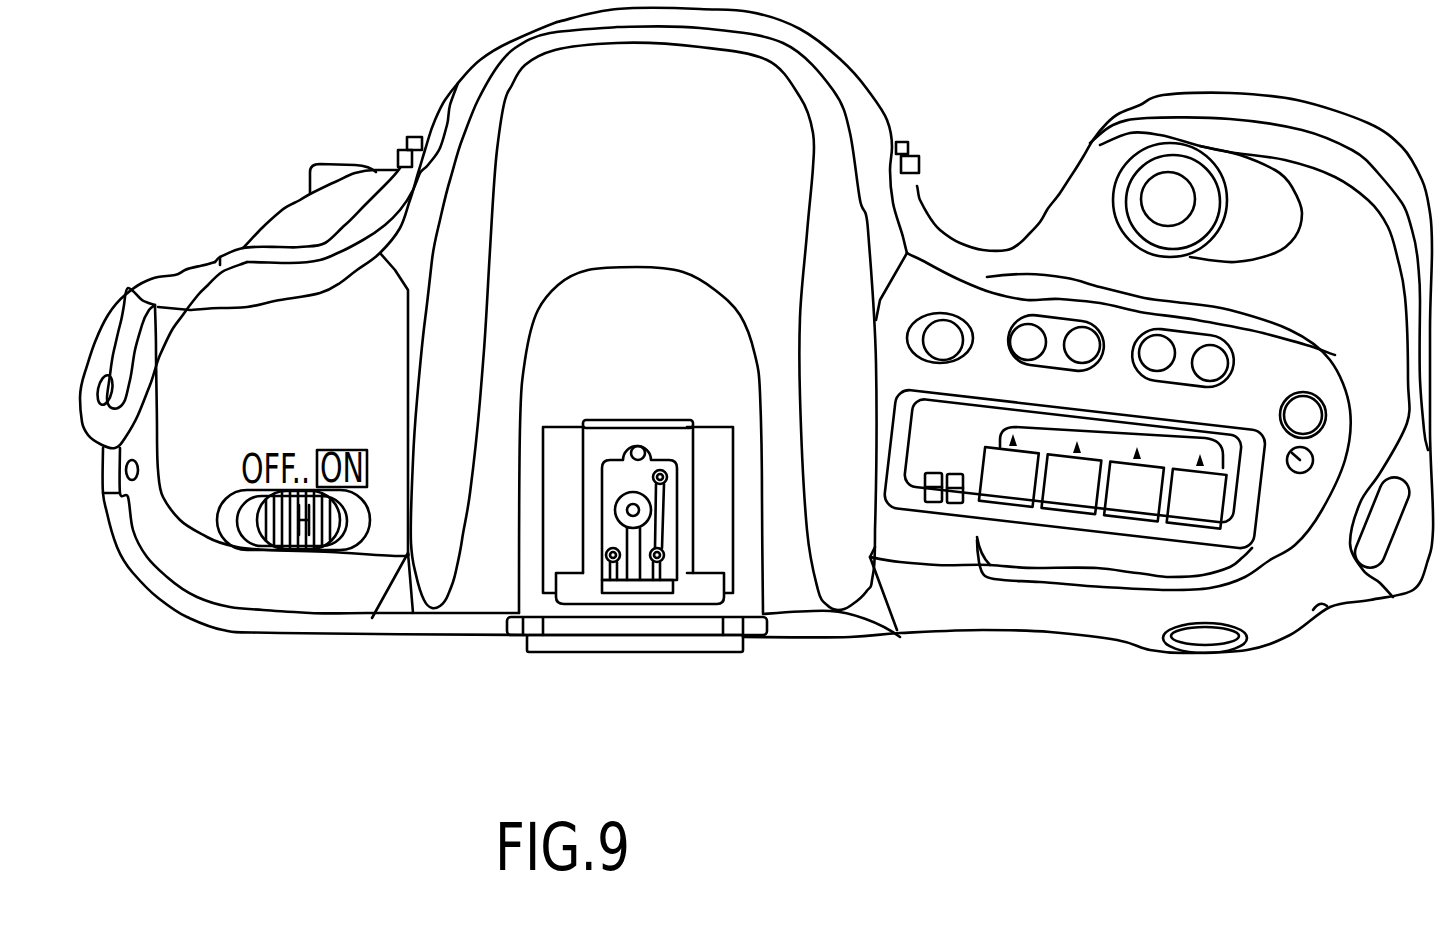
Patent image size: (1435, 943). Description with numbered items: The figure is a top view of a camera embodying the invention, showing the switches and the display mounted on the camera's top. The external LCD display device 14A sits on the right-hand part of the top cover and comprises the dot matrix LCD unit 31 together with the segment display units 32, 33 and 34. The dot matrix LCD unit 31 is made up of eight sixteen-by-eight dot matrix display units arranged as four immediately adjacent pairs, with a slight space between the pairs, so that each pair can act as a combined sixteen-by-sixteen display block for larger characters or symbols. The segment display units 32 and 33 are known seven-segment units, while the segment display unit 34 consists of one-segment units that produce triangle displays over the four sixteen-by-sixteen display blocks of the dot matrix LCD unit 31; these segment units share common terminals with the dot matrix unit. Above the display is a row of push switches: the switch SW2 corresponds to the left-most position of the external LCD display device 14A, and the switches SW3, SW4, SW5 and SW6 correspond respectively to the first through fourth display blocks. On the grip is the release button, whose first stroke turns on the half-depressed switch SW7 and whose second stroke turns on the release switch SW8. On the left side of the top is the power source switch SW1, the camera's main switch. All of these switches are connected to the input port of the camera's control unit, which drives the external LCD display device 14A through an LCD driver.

The power source switch SW1 is at (253, 537).
The switch SW2 is at (943, 337).
The switch SW3 is at (1027, 330).
The switch SW4 is at (1080, 340).
The switch SW5 is at (1157, 353).
The switch SW6 is at (1210, 367).
The half-depressed switch SW7 is at (1207, 141).
The release switch SW8 is at (1183, 187).
The dot matrix LCD unit 31 is at (1097, 568).
The segment display unit 32 is at (967, 492).
The segment display unit 33 is at (913, 486).
The segment display unit 34 is at (1120, 440).
The external LCD display device 14A is at (1237, 527).